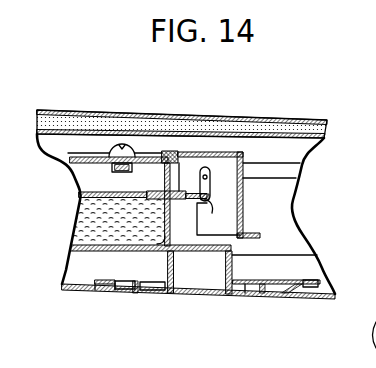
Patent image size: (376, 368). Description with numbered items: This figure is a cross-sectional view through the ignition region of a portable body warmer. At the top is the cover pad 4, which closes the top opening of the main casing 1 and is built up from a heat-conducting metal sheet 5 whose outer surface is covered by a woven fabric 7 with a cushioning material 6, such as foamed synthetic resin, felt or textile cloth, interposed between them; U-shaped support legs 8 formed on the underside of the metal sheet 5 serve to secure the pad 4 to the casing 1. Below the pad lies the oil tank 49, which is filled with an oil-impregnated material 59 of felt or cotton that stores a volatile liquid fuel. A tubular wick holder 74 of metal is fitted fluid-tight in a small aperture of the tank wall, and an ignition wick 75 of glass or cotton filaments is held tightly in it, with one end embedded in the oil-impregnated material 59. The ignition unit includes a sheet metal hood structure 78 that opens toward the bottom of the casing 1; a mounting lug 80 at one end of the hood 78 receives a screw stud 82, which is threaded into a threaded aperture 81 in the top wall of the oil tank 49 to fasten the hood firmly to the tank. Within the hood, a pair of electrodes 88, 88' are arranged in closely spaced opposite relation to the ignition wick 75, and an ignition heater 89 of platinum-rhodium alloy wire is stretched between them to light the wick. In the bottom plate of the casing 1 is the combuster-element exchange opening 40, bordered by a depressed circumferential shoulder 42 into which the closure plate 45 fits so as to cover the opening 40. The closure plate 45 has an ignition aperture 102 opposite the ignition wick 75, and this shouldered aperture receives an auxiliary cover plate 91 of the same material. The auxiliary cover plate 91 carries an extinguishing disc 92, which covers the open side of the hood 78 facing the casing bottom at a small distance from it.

The main casing 1 is at (335, 297).
The cover pad 4 is at (300, 119).
The metal sheet 5 is at (317, 142).
The cushioning material 6 is at (324, 128).
The woven fabric 7 is at (321, 123).
The support legs 8 is at (369, 301).
The combuster-element exchange opening 40 is at (273, 294).
The circumferential shoulder 42 is at (110, 293).
The closure plate 45 is at (117, 295).
The oil tank 49 is at (95, 248).
The oil-impregnated material 59 is at (97, 238).
The tubular wick holder 74 is at (155, 190).
The ignition wick 75 is at (226, 152).
The hood structure 78 is at (243, 152).
The mounting lug 80 is at (143, 155).
The threaded aperture 81 is at (108, 167).
The screw stud 82 is at (122, 143).
The electrode 88 is at (218, 219).
The electrode 88' is at (242, 184).
The ignition heater 89 is at (209, 191).
The auxiliary cover plate 91 is at (231, 294).
The extinguishing disc 92 is at (201, 254).
The ignition aperture 102 is at (165, 292).